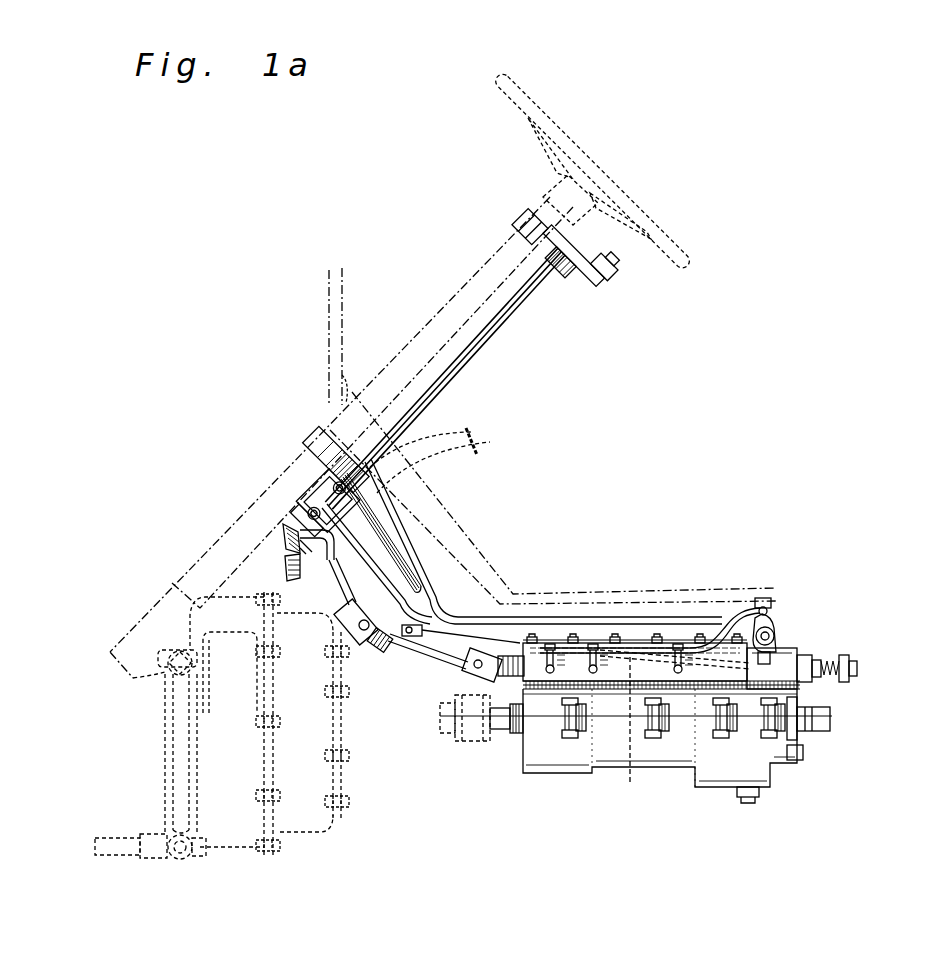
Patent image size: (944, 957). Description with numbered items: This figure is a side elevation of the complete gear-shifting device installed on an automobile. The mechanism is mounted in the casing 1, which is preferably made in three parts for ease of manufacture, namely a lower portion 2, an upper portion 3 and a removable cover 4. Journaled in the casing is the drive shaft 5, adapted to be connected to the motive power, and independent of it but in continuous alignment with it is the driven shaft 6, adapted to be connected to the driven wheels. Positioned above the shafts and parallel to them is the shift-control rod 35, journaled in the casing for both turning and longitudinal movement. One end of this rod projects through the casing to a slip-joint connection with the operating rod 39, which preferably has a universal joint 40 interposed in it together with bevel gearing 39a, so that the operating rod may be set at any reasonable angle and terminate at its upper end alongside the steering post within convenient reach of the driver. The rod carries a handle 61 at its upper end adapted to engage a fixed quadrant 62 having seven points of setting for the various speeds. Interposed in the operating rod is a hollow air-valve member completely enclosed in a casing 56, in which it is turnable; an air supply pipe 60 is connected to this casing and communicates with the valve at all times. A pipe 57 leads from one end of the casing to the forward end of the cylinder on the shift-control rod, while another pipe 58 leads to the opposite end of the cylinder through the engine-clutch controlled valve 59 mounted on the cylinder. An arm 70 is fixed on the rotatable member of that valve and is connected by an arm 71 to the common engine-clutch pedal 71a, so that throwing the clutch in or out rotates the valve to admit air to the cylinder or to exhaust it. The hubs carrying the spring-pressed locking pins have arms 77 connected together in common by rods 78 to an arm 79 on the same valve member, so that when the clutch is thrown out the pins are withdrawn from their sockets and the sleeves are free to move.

The casing 1 is at (612, 708).
The lower portion 2 is at (702, 765).
The upper portion 3 is at (556, 692).
The removable cover 4 is at (673, 643).
The drive shaft 5 is at (505, 736).
The driven shaft 6 is at (814, 750).
The shift-control rod 35 is at (846, 700).
The operating rod 39 is at (404, 422).
The bevel gearing 39a is at (283, 550).
The universal joint 40 is at (484, 664).
The casing 56 is at (316, 472).
The pipe 57 is at (440, 582).
The pipe 58 is at (462, 605).
The engine-clutch controlled valve 59 is at (772, 634).
The air supply pipe 60 is at (422, 578).
The handle 61 is at (614, 266).
The fixed quadrant 62 is at (593, 288).
The arm 70 is at (778, 650).
The arm 71 is at (440, 668).
The engine-clutch pedal 71a is at (478, 450).
The arms 77 is at (595, 648).
The rods 78 is at (641, 645).
The arm 79 is at (766, 608).